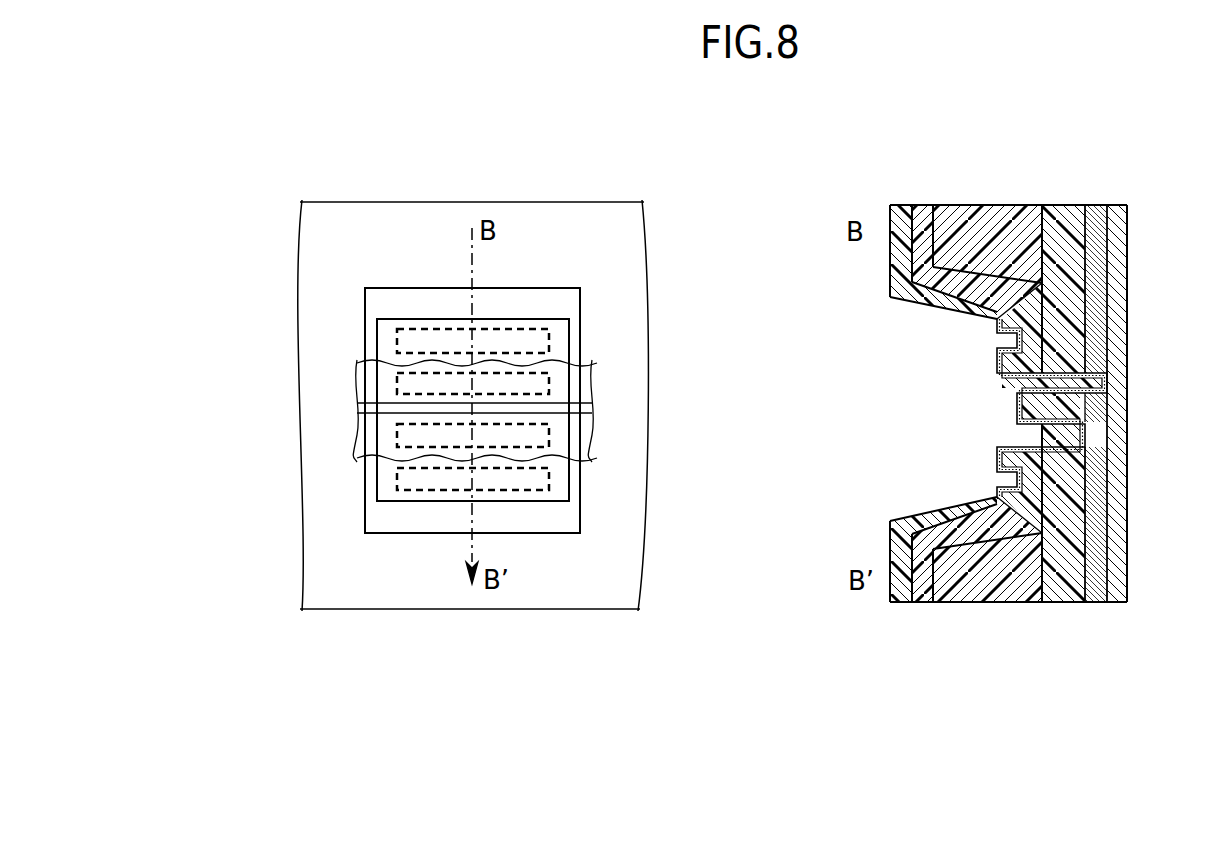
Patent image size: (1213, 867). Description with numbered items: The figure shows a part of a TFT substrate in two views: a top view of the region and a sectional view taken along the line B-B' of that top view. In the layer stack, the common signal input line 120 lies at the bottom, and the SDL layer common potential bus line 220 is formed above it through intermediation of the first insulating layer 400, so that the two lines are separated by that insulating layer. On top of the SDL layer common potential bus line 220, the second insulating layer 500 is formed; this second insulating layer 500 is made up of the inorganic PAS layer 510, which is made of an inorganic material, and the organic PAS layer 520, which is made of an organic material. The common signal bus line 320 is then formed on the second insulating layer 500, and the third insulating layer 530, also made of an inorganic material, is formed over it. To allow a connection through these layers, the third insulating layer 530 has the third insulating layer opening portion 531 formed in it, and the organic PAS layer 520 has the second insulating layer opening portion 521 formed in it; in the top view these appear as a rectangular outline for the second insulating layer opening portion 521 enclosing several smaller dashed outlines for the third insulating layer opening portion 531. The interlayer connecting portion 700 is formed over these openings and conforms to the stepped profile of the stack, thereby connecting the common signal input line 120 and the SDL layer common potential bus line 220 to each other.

The common signal input line 120 is at (592, 385).
The SDL layer common potential bus line 220 is at (592, 440).
The common signal bus line 320 is at (931, 597).
The first insulating layer 400 is at (1118, 597).
The second insulating layer 500 is at (1082, 692).
The inorganic PAS layer 510 is at (1067, 597).
The organic PAS layer 520 is at (992, 597).
The second insulating layer opening portion 521 is at (580, 292).
The third insulating layer 530 is at (903, 597).
The third insulating layer opening portion 531 is at (397, 341).
The interlayer connecting portion 700 is at (569, 340).